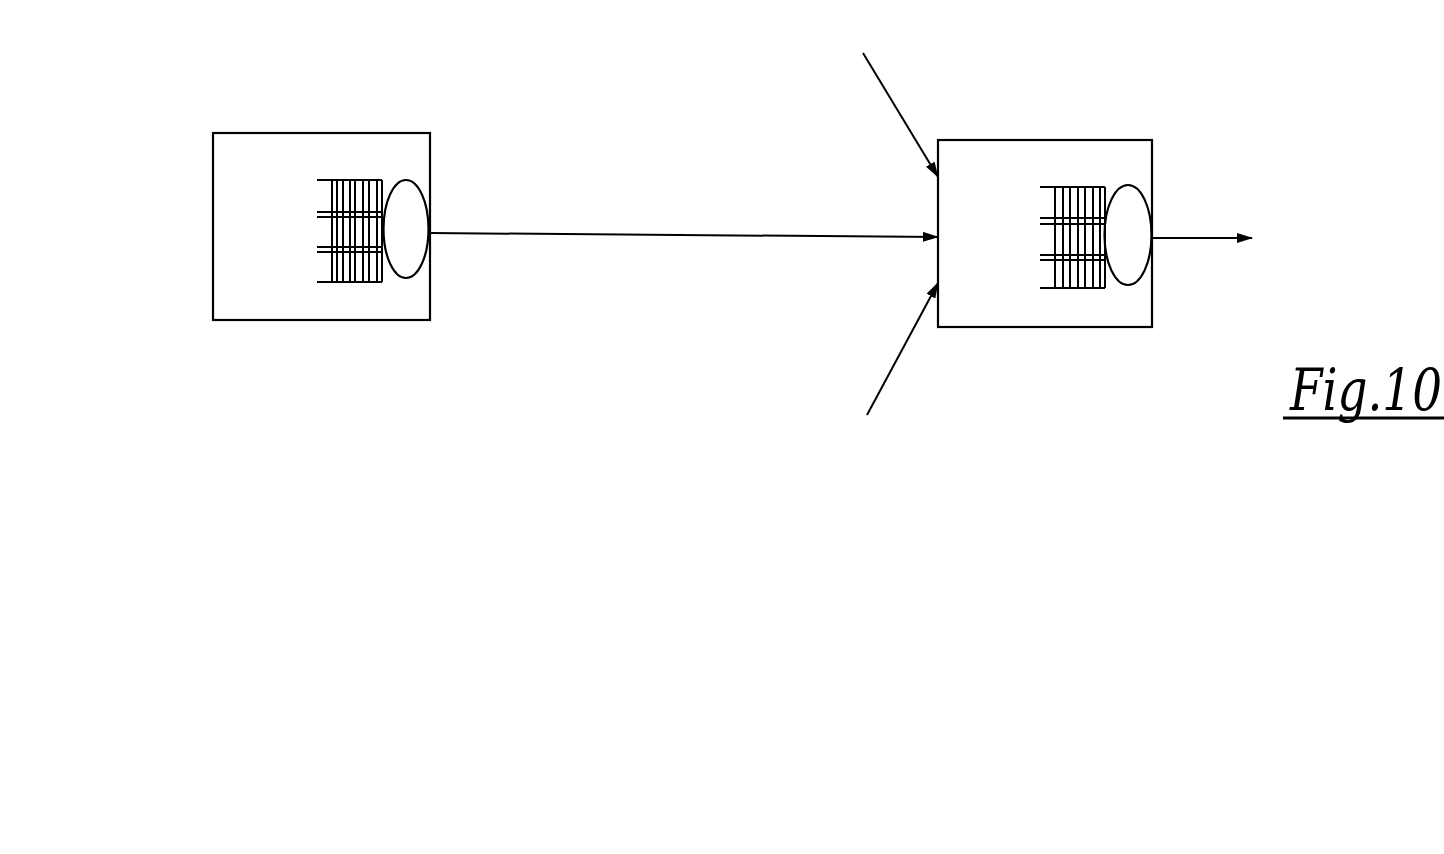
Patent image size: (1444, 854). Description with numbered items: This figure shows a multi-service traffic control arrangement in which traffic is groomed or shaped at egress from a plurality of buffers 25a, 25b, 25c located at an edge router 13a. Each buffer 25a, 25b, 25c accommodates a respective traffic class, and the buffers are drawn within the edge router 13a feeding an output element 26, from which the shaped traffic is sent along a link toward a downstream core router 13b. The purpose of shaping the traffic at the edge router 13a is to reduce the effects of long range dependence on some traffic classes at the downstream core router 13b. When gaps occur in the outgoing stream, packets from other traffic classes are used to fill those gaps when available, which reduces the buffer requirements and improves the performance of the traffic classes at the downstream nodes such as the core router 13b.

The edge router 13a is at (430, 292).
The downstream core router 13b is at (1068, 327).
The buffer 25a is at (350, 282).
The buffer 25b is at (330, 238).
The buffer 25c is at (357, 182).
The data packet dk 26 is at (425, 195).